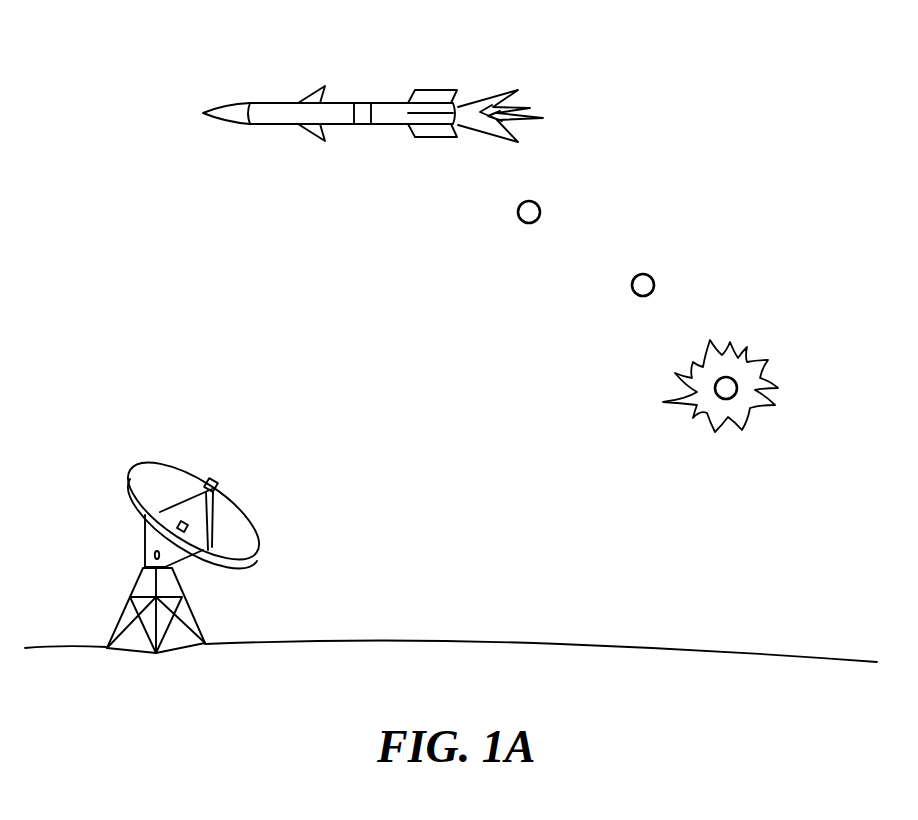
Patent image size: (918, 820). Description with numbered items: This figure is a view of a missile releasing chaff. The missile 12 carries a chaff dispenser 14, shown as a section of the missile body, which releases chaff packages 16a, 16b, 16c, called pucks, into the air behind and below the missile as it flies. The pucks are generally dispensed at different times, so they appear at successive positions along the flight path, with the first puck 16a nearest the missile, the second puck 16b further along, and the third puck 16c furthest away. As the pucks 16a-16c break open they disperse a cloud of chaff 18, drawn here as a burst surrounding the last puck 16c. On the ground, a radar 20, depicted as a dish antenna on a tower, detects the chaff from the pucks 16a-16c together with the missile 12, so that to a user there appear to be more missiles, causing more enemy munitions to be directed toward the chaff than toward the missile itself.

The missile 12 is at (383, 80).
The chaff dispenser 14 is at (357, 126).
The chaff package 16a is at (533, 200).
The chaff package 16b is at (648, 273).
The chaff package 16c is at (735, 378).
The cloud of chaff 18 is at (688, 402).
The radar 20 is at (142, 462).